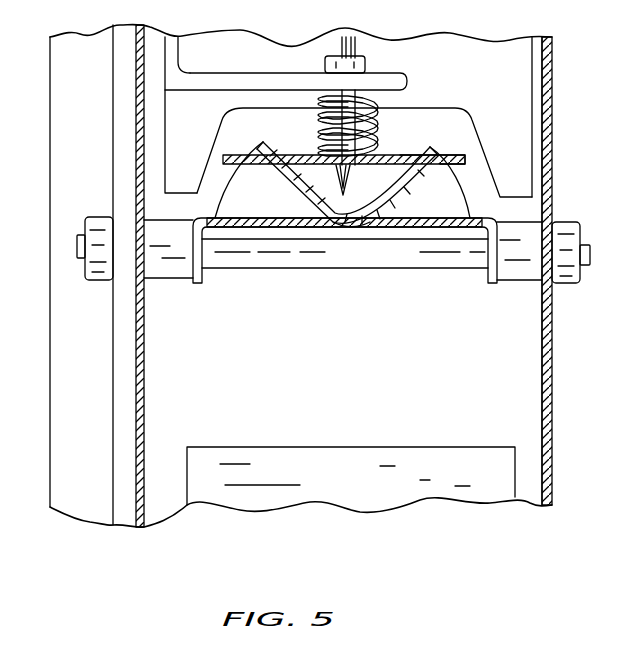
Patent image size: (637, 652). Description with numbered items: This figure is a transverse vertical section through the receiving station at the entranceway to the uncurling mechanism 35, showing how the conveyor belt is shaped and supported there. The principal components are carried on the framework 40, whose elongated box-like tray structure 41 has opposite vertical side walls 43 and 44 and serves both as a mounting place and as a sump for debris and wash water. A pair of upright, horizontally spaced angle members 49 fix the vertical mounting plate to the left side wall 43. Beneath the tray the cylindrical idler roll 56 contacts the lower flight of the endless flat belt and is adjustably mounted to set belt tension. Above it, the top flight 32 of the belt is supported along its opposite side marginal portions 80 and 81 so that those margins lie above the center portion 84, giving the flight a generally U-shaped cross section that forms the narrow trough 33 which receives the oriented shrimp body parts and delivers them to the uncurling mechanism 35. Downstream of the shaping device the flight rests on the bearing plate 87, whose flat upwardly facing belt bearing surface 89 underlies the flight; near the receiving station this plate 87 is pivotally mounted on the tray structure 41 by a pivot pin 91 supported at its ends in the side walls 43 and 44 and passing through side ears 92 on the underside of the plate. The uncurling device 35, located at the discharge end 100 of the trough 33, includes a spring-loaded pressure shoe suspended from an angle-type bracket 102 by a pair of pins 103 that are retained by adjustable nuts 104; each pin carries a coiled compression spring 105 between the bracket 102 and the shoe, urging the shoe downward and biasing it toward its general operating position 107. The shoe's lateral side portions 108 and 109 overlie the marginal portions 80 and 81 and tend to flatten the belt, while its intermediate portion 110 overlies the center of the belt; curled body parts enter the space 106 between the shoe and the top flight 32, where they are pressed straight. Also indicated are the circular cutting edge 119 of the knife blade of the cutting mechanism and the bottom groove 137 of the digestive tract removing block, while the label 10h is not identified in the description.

The angle members 49 is at (50, 166).
The left side wall 43 is at (136, 350).
The framework 40 is at (552, 410).
The tray structure 41 is at (548, 438).
The side wall 44 is at (545, 468).
The angle-type bracket 102 is at (233, 68).
The nuts 104 is at (325, 65).
The pins 103 is at (362, 54).
The coiled compression spring 105 is at (320, 120).
The bottom groove 137 is at (432, 106).
The top flight 32 is at (458, 184).
The lateral side portion 108 is at (236, 122).
The lateral side portion 109 is at (437, 135).
The general operating position 107 is at (440, 150).
The side marginal portion 81 is at (407, 172).
The circular cutting edge 119 is at (332, 204).
The space 106 is at (318, 192).
The side marginal portion 80 is at (288, 180).
The trough 33 is at (318, 166).
The intermediate portion 110 is at (380, 165).
The uncurling mechanism 35 is at (381, 120).
The opening 10h is at (418, 148).
The belt bearing surface 89 is at (415, 218).
The discharge end 100 is at (222, 204).
The bearing plate 87 is at (255, 232).
The center portion 84 is at (332, 228).
The pivot pin 91 is at (412, 272).
The side ears 92 is at (184, 272).
The cylindrical idler roll 56 is at (350, 447).